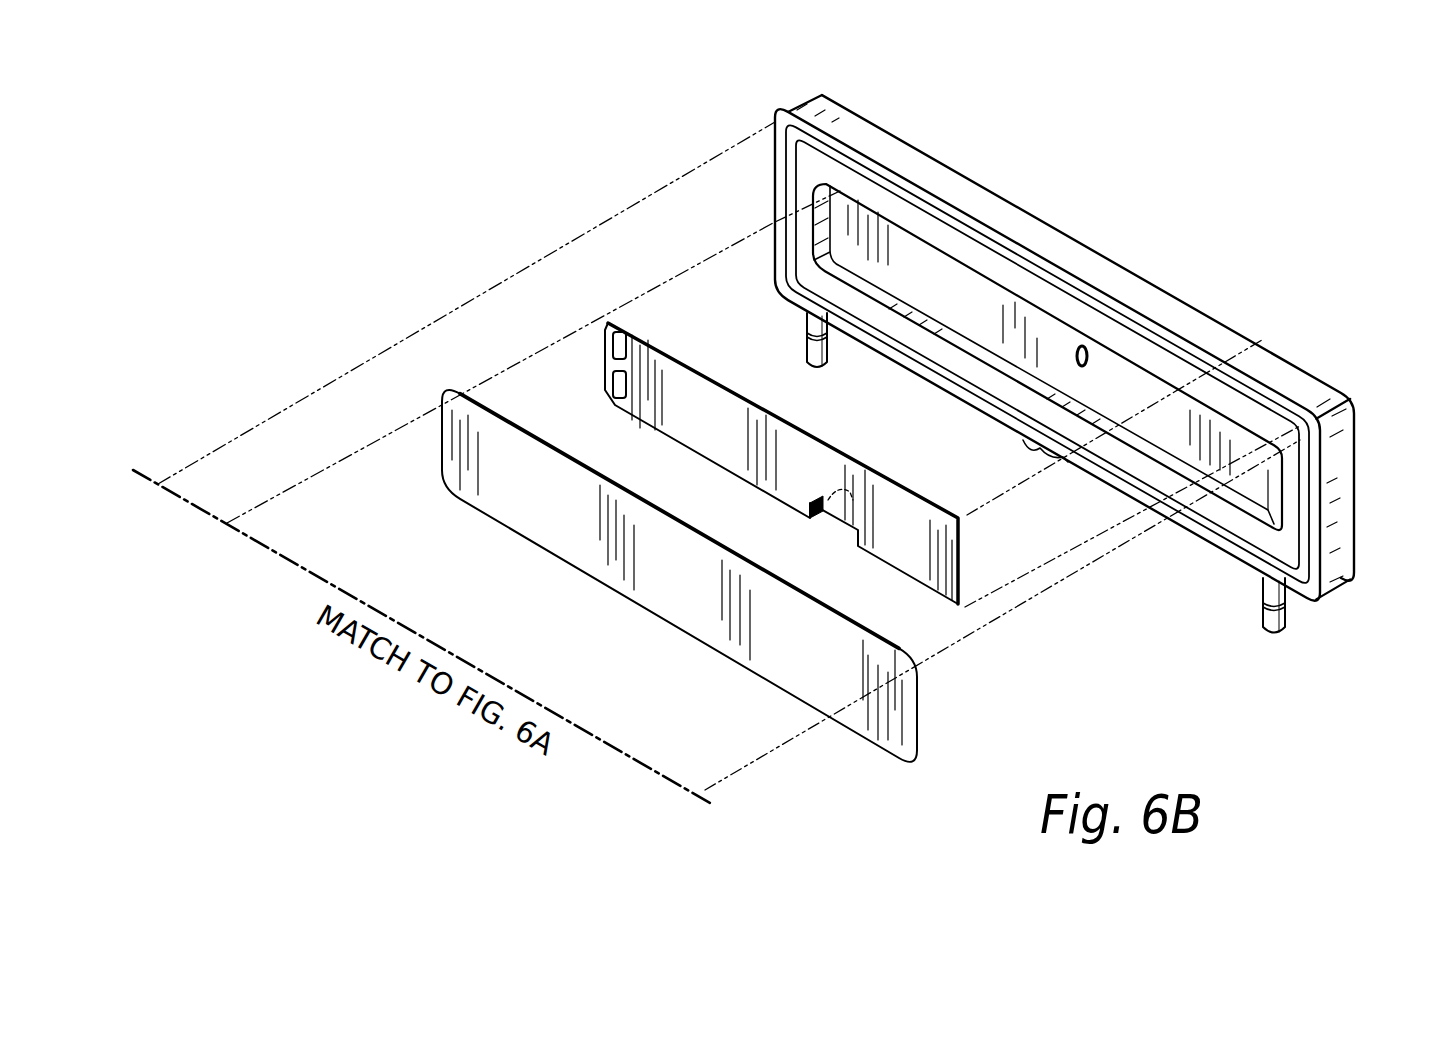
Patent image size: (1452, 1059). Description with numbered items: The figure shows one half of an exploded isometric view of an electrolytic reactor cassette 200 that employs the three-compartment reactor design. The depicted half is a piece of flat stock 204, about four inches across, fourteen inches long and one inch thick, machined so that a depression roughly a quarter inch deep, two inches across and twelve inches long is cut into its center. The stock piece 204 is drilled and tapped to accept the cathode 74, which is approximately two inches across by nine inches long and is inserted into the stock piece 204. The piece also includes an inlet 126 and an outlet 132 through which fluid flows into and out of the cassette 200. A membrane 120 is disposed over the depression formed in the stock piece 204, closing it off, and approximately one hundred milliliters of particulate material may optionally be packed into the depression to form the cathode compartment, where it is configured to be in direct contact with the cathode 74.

The electrolytic reactor cassette 200 is at (460, 268).
The flat stock piece 204 is at (1350, 509).
The inlet 126 is at (827, 362).
The outlet 132 is at (1287, 623).
The cathode 74 is at (908, 543).
The membrane 120 is at (857, 724).